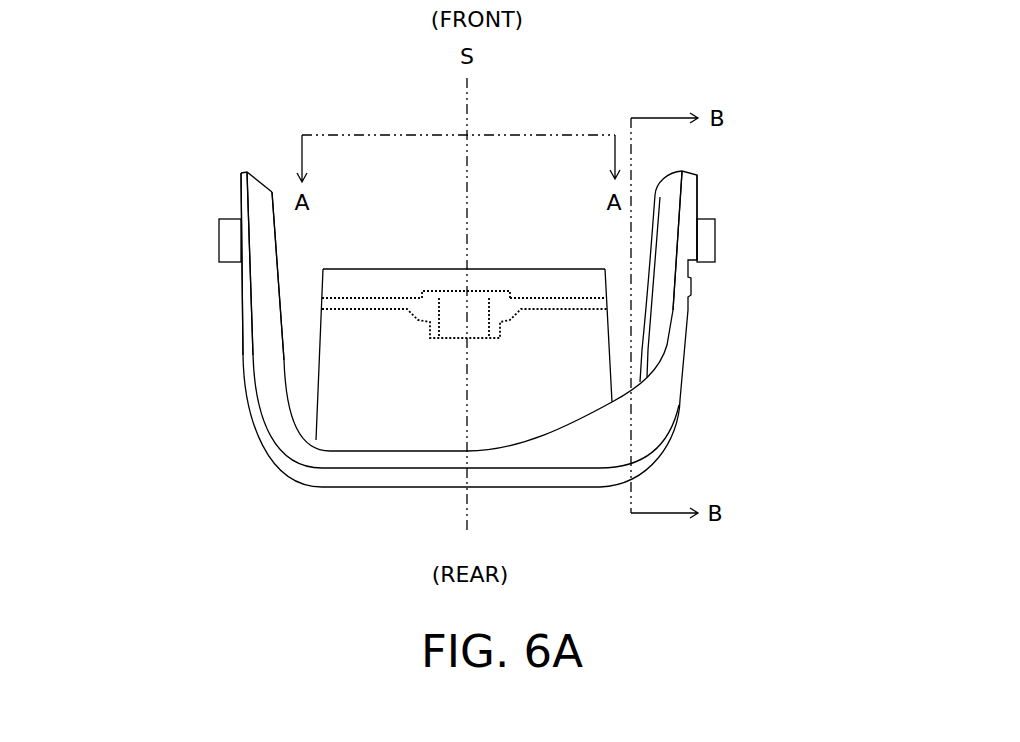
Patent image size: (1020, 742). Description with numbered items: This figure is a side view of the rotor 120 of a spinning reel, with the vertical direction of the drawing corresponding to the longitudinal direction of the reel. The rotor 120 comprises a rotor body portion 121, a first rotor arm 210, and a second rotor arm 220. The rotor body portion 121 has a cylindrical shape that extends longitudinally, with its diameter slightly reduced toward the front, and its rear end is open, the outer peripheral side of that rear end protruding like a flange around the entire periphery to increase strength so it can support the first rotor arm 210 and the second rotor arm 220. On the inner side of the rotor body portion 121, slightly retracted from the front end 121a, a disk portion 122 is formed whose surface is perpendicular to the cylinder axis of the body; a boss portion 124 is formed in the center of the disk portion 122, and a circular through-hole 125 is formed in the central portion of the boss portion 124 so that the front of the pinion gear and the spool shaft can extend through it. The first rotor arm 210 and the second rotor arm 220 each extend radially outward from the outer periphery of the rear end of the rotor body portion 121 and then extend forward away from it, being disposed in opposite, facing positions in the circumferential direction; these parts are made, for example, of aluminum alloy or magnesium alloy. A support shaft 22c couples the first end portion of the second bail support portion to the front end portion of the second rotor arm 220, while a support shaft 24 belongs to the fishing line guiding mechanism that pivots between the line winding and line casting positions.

The rotor 120 is at (608, 70).
The second rotor arm 220 is at (241, 323).
The first rotor arm 210 is at (683, 345).
The support shaft 22c is at (219, 244).
The support shaft 24 is at (715, 240).
The rotor body portion 121 is at (606, 290).
The front end 121a is at (548, 268).
The disk portion 122 is at (382, 298).
The boss portion 124 is at (430, 291).
The through-hole 125 is at (475, 303).